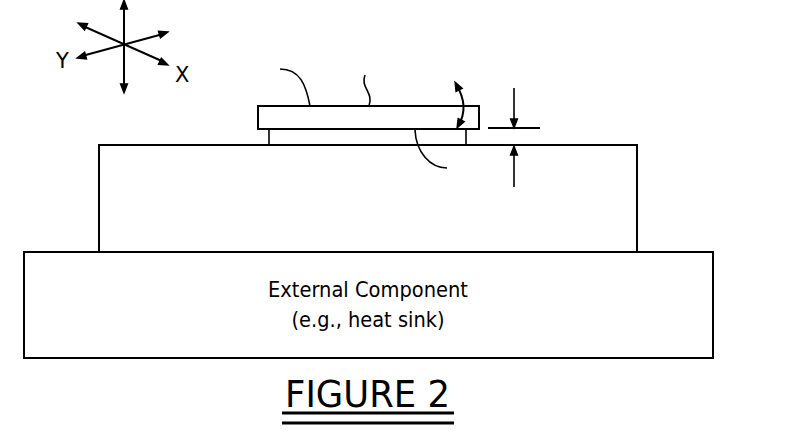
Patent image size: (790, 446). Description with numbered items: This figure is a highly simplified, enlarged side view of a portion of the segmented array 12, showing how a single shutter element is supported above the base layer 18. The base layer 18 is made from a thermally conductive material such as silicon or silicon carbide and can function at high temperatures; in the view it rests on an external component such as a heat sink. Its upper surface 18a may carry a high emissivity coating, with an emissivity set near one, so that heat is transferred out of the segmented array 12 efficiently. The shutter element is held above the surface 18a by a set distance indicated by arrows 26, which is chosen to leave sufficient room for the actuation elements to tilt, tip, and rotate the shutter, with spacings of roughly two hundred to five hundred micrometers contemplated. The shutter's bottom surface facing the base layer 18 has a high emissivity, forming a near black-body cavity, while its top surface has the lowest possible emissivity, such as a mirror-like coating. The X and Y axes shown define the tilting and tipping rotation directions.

The segmented array 12 is at (490, 70).
The base layer 18 is at (637, 198).
The surface 18a is at (122, 144).
The arrows 26 is at (514, 100).